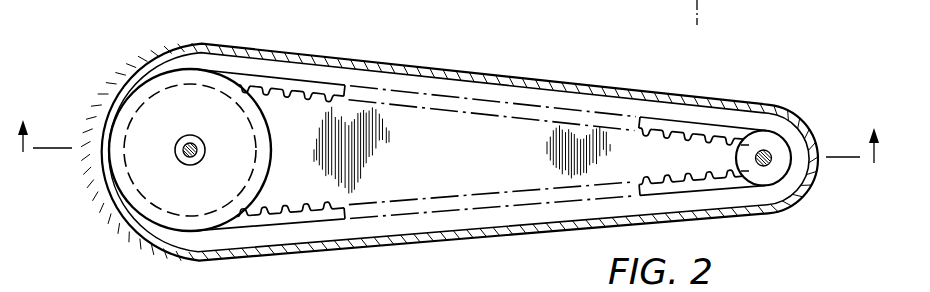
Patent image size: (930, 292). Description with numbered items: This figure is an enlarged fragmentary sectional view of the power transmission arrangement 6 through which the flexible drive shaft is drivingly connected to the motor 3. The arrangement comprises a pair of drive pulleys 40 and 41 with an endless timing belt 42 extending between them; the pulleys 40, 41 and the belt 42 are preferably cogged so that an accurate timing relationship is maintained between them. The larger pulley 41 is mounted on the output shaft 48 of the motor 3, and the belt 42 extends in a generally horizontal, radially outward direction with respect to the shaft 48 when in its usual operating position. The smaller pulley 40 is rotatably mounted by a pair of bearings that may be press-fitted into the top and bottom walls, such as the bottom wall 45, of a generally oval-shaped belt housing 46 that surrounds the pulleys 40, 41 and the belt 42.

The power transmission arrangement 6 is at (368, 52).
The belt housing 46 is at (445, 64).
The drive pulley 41 is at (148, 129).
The output shaft 48 is at (192, 158).
The drive pulley 40 is at (773, 141).
The endless timing belt 42 is at (315, 213).
The bottom wall 45 is at (466, 166).
The motor 3 is at (448, 153).